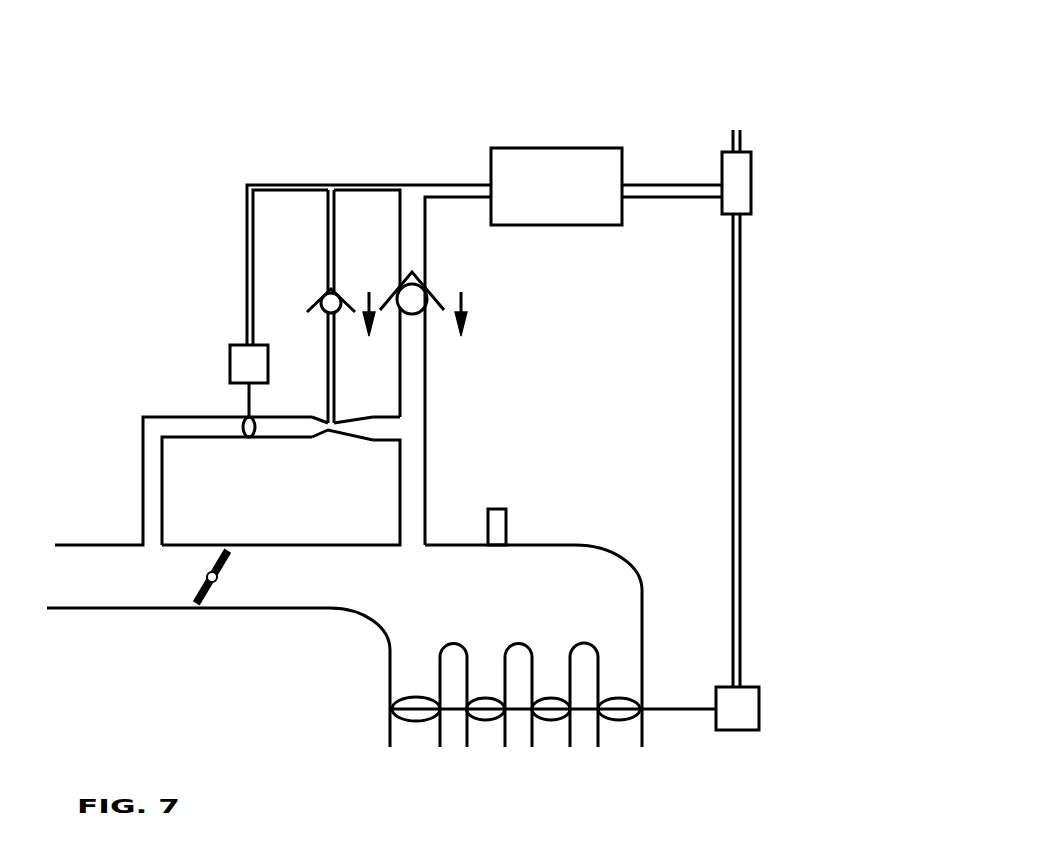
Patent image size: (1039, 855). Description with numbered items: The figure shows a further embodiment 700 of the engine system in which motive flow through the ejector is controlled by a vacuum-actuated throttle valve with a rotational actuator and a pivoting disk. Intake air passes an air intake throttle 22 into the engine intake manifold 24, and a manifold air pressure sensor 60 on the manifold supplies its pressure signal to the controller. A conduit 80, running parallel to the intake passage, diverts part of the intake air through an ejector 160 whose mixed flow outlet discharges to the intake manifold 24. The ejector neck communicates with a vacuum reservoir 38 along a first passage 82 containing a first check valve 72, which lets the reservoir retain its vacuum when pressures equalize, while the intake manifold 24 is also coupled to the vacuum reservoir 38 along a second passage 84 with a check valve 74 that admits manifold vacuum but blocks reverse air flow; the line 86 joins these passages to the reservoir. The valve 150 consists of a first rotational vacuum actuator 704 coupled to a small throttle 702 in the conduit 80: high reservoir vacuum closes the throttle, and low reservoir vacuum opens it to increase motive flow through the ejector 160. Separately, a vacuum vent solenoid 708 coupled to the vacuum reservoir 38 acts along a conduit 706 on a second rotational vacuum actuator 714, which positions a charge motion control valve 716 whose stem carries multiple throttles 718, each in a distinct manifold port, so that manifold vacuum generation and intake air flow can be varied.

The embodiment of the engine system 700 is at (921, 57).
The passage 86 is at (362, 185).
The first passage 82 is at (334, 243).
The first check valve 72 is at (338, 297).
The check valve 74 is at (433, 297).
The second passage 84 is at (427, 378).
The vacuum reservoir 38 is at (606, 186).
The vacuum vent solenoid 708 is at (752, 182).
The conduit 706 is at (741, 345).
The second rotational vacuum actuator 714 is at (762, 716).
The charge motion control valve 716 is at (655, 707).
The valve 150 is at (212, 313).
The first rotational vacuum actuator 704 is at (230, 368).
The throttle 702 is at (250, 440).
The conduit 80 is at (165, 417).
The ejector 160 is at (328, 440).
The engine intake manifold 24 is at (617, 558).
The air intake throttle 22 is at (199, 604).
The manifold air pressure sensor 60 is at (496, 509).
The throttles 718 is at (401, 695).